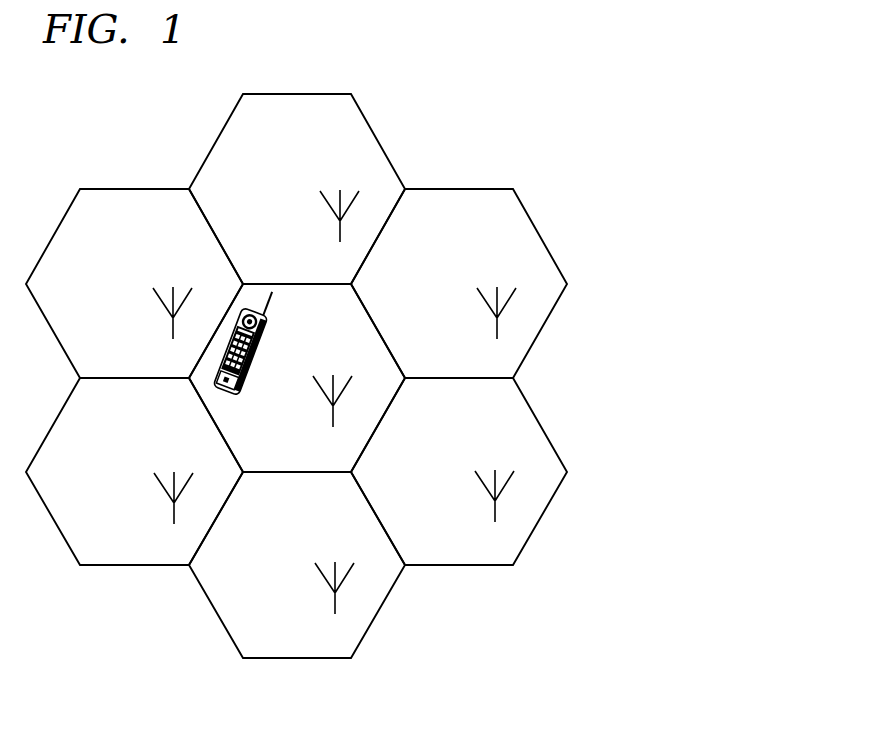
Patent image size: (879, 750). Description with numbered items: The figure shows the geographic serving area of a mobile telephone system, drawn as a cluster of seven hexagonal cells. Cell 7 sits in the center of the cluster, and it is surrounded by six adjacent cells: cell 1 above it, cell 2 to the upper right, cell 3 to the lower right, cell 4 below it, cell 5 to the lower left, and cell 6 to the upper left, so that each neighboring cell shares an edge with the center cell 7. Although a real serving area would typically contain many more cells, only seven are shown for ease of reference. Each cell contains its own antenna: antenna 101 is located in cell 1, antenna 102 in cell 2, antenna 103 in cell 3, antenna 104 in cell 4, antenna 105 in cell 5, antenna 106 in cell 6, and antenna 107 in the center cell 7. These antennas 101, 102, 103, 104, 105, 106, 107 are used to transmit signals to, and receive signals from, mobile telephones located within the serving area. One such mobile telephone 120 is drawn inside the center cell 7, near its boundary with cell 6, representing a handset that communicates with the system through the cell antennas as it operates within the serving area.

The cell 1 is at (297, 189).
The cell 2 is at (459, 283).
The cell 3 is at (459, 471).
The cell 4 is at (297, 565).
The cell 5 is at (134, 471).
The cell 6 is at (134, 283).
The cell 7 is at (297, 378).
The antenna 101 is at (336, 214).
The antenna 102 is at (494, 327).
The antenna 103 is at (492, 511).
The antenna 104 is at (331, 600).
The antenna 105 is at (171, 510).
The antenna 106 is at (170, 325).
The antenna 107 is at (328, 413).
The mobile telephone 120 is at (265, 334).